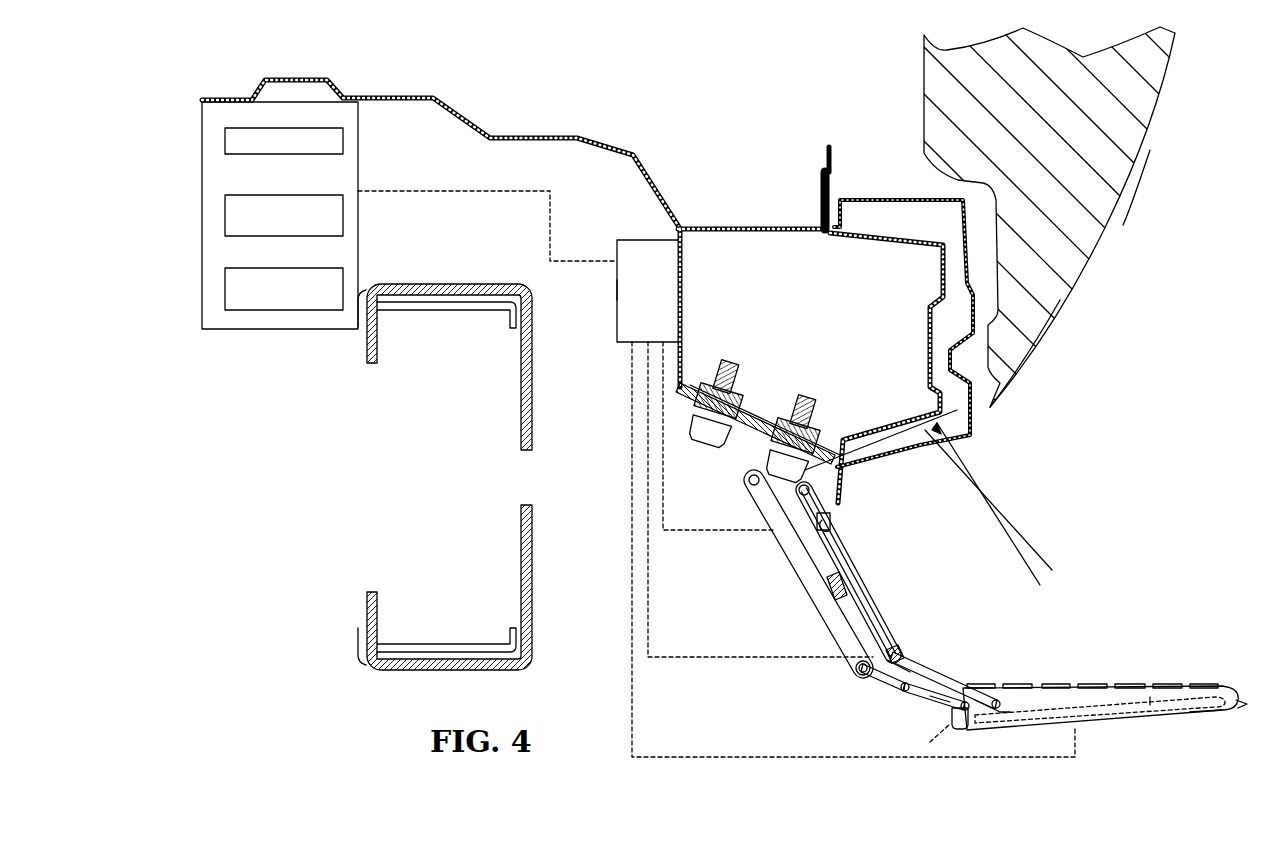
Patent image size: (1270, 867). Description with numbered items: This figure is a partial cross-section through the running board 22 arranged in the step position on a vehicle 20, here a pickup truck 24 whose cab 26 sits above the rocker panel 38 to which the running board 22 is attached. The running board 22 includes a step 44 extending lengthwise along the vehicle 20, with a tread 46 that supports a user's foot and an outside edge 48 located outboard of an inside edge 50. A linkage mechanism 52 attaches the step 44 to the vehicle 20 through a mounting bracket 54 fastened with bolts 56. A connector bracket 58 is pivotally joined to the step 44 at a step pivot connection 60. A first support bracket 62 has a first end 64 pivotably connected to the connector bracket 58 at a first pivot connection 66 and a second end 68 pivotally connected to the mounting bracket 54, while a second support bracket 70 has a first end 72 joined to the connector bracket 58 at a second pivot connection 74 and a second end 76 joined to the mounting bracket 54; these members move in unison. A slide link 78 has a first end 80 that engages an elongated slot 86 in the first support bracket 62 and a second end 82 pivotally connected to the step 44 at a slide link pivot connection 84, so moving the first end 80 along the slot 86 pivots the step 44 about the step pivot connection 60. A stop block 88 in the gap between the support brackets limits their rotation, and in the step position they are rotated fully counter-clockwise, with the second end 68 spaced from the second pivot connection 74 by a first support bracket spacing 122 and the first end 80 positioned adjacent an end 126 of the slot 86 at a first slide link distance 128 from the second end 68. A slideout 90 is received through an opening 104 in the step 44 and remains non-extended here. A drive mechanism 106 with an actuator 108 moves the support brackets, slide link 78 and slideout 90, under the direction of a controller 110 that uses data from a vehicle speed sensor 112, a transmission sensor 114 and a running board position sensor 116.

The vehicle 20 is at (1172, 77).
The running board 22 is at (1147, 719).
The pickup truck 24 is at (1132, 203).
The cab 26 is at (1070, 315).
The rocker panel 38 is at (980, 450).
The step 44 is at (1196, 714).
The tread 46 is at (1050, 684).
The outside edge 48 is at (1242, 696).
The inside edge 50 is at (952, 712).
The linkage mechanism 52 is at (860, 554).
The mounting bracket 54 is at (738, 460).
The bolts 56 is at (812, 395).
The connector bracket 58 is at (864, 678).
The step pivot connection 60 is at (966, 722).
The first support bracket 62 is at (865, 582).
The first end 64 is at (905, 695).
The first pivot connection 66 is at (908, 688).
The second end 68 is at (818, 462).
The second support bracket 70 is at (805, 575).
The first end 72 is at (860, 675).
The second pivot connection 74 is at (850, 670).
The second end 76 is at (745, 480).
The slide link 78 is at (935, 680).
The first end 80 is at (897, 645).
The second end 82 is at (998, 700).
The slide link pivot connection 84 is at (1005, 710).
The slot 86 is at (830, 527).
The stop block 88 is at (815, 560).
The slideout 90 is at (1148, 695).
The opening 104 is at (923, 738).
The drive mechanism 106 is at (630, 240).
The actuator 108 is at (615, 292).
The controller 110 is at (255, 329).
The vehicle speed sensor 112 is at (343, 143).
The transmission sensor 114 is at (343, 218).
The running board position sensor 116 is at (322, 310).
The first support bracket spacing 122 is at (848, 615).
The end 126 is at (910, 660).
The first slide link distance 128 is at (1000, 500).